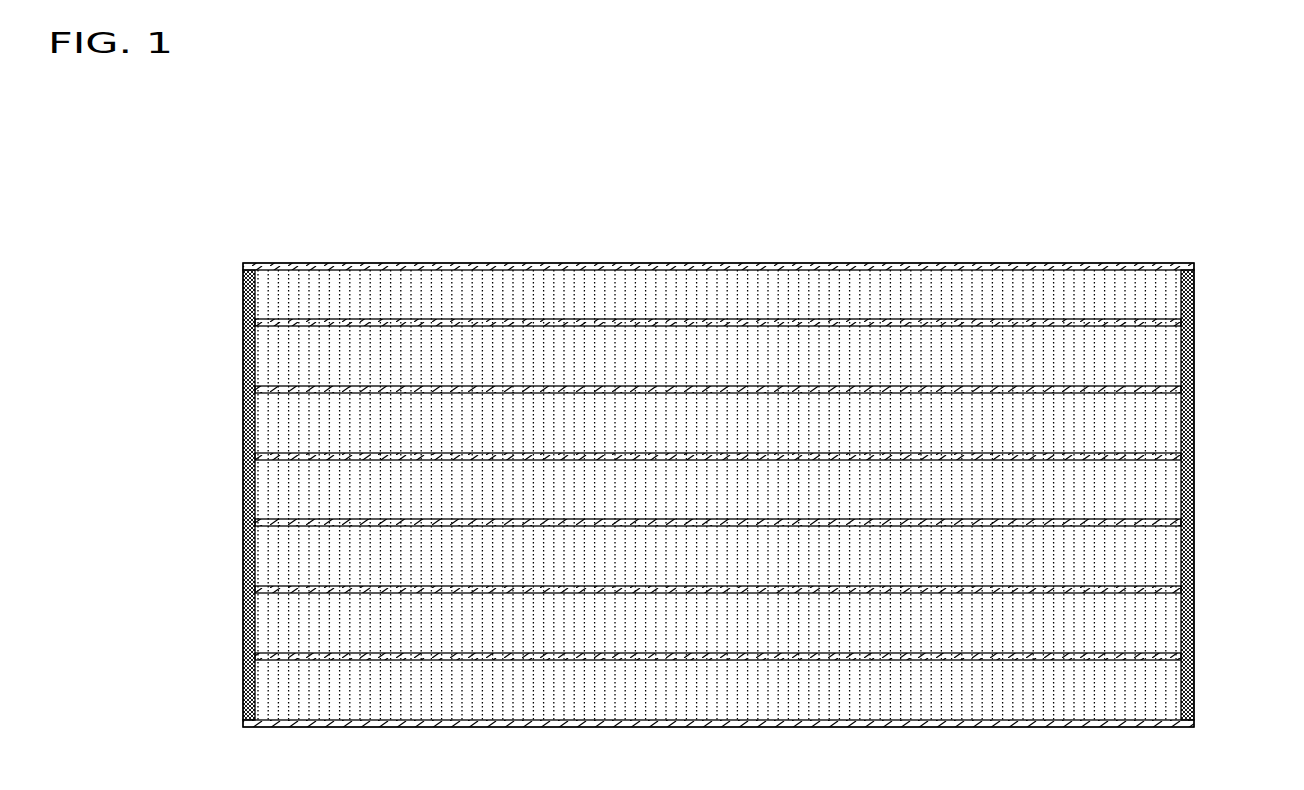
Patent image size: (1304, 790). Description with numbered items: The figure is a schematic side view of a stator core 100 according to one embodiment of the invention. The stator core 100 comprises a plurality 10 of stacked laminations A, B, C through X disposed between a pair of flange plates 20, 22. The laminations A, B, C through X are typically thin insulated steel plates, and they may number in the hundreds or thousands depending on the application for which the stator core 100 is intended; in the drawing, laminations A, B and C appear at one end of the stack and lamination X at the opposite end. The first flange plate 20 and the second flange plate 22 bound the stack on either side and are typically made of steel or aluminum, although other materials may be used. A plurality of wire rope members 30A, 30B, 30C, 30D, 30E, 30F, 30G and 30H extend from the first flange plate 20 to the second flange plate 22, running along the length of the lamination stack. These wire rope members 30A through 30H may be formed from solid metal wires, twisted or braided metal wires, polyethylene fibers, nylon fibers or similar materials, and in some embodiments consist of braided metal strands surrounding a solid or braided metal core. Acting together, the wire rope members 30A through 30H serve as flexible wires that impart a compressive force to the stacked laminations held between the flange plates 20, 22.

The stator core 100 is at (212, 197).
The plurality of stacked laminations 10 is at (255, 247).
The first flange plate 20 is at (250, 367).
The second flange plate 22 is at (1188, 368).
The wire rope member 30A is at (243, 263).
The wire rope member 30B is at (243, 320).
The wire rope member 30C is at (272, 389).
The wire rope member 30D is at (272, 456).
The wire rope member 30E is at (272, 522).
The wire rope member 30F is at (272, 589).
The wire rope member 30G is at (272, 656).
The wire rope member 30H is at (272, 723).
The lamination A is at (261, 283).
The lamination B is at (272, 290).
The lamination C is at (284, 298).
The lamination X is at (1174, 288).